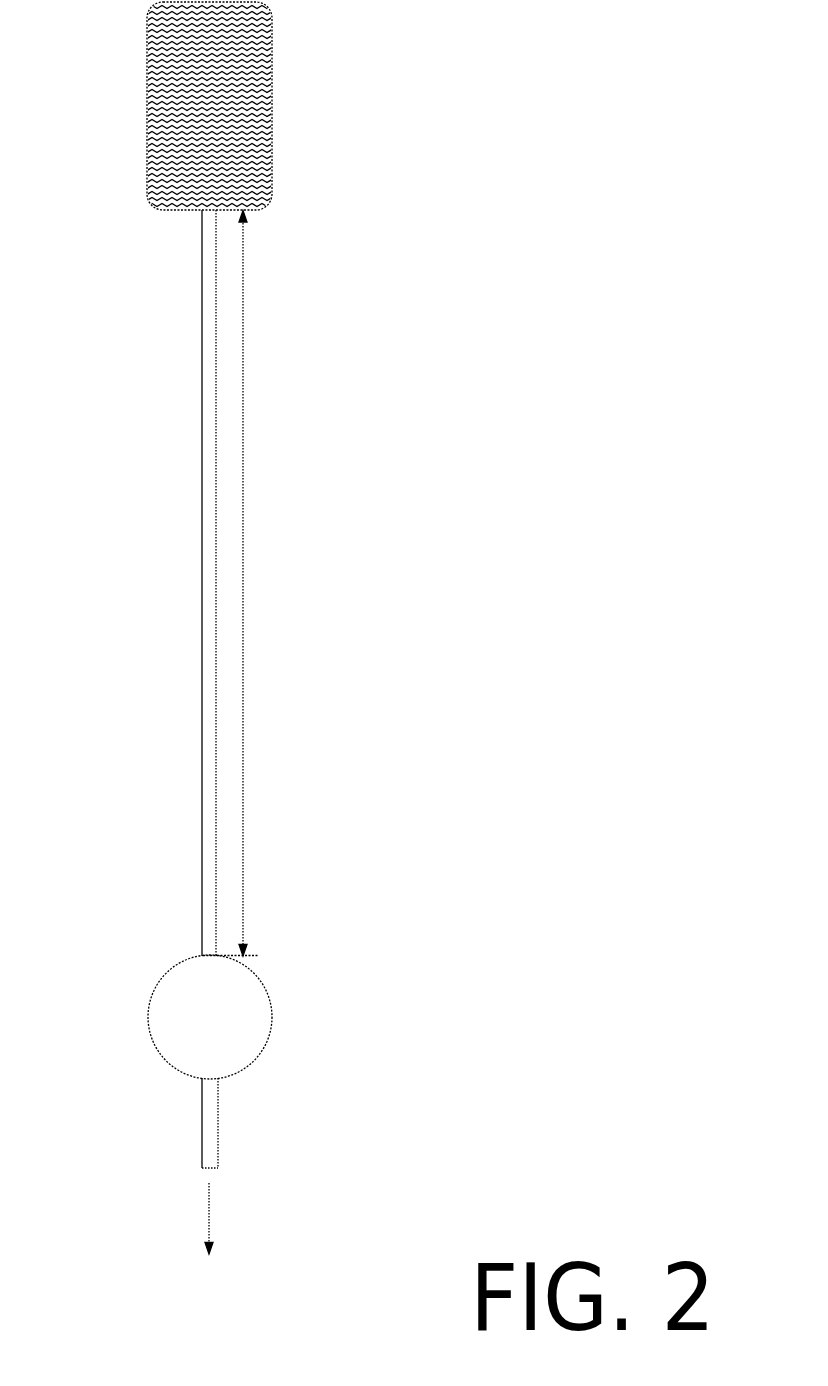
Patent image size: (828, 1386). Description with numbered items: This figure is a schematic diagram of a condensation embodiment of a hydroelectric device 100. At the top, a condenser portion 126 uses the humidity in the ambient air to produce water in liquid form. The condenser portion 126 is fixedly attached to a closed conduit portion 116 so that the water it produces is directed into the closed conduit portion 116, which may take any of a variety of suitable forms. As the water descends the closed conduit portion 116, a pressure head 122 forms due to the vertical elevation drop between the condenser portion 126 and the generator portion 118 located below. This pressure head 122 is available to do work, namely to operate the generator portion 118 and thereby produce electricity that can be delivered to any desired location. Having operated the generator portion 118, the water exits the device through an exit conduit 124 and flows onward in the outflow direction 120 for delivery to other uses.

The hydroelectric device 100 is at (492, 299).
The condenser portion 126 is at (263, 200).
The closed conduit portion 116 is at (202, 588).
The pressure head 122 is at (245, 552).
The generator portion 118 is at (210, 1017).
The exit conduit 124 is at (202, 1117).
The fluid outflow direction 120 is at (211, 1215).